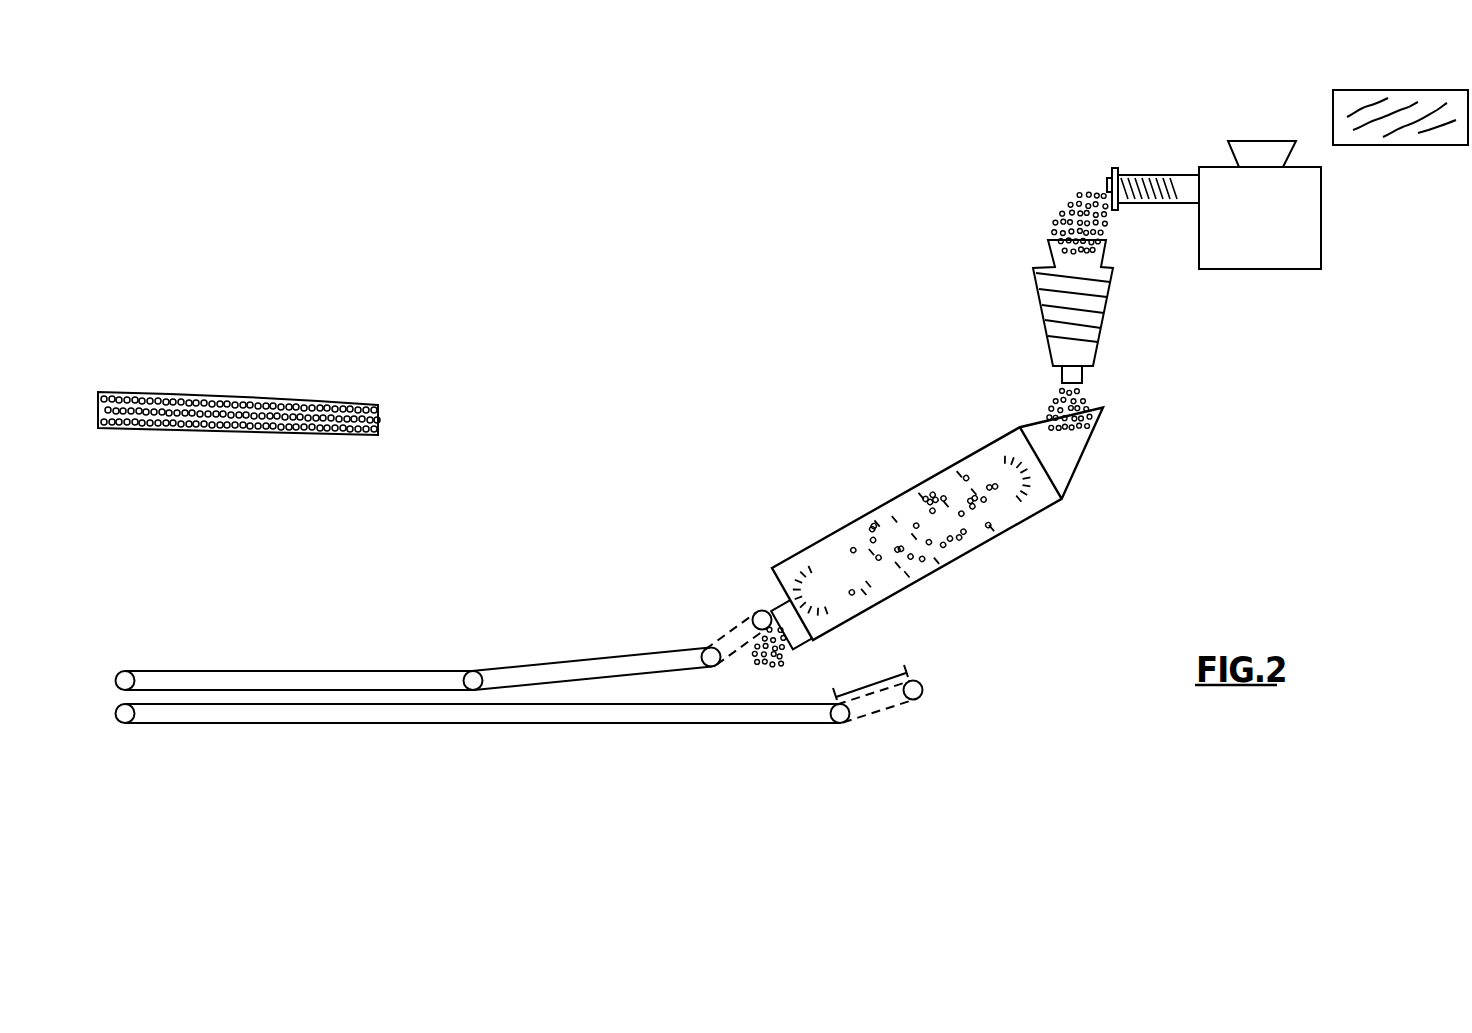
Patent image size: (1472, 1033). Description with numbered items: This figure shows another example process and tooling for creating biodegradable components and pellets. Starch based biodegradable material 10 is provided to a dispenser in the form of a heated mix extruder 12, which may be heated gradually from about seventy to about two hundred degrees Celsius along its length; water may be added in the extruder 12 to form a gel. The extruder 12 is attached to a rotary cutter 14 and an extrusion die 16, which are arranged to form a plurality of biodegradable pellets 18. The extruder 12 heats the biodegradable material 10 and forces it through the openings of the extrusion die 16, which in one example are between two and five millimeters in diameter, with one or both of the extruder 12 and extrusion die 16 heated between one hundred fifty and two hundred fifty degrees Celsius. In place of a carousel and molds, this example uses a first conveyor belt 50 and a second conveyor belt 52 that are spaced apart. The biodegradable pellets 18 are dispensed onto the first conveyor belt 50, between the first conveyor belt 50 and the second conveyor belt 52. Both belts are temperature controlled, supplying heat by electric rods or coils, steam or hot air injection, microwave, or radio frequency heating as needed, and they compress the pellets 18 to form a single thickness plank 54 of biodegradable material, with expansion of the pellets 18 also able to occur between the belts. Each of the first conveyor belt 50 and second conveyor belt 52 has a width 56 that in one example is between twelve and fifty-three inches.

The starch based biodegradable material 10 is at (1422, 63).
The heated mix extruder 12 is at (1290, 233).
The rotary cutter 14 is at (1107, 183).
The extrusion die 16 is at (1116, 168).
The biodegradable pellets 18 is at (1070, 215).
The first conveyor belt 50 is at (723, 715).
The second conveyor belt 52 is at (618, 658).
The single thickness plank 54 is at (282, 400).
The width 56 is at (875, 682).